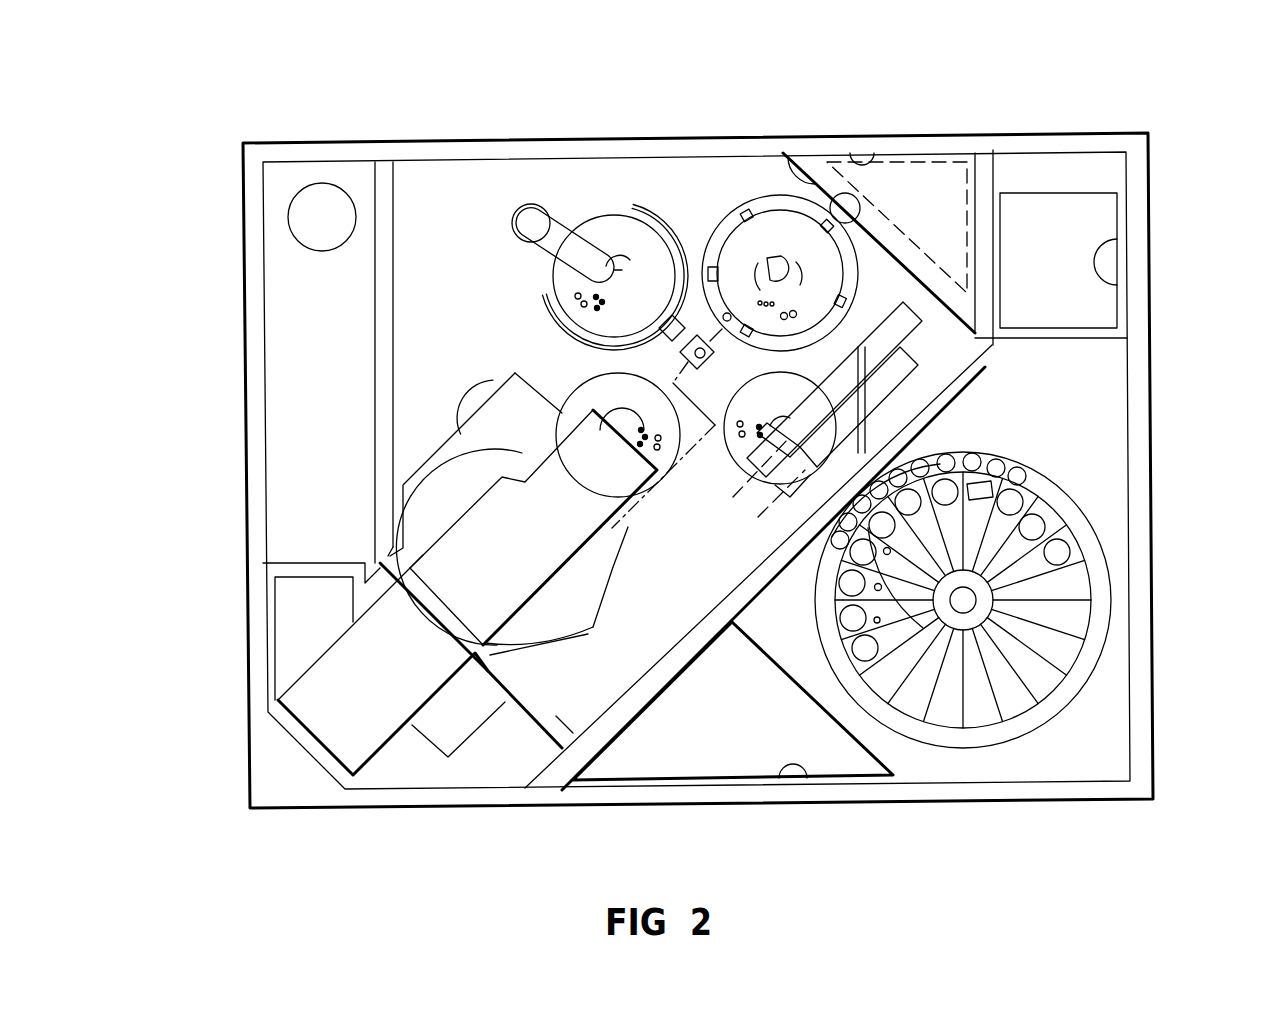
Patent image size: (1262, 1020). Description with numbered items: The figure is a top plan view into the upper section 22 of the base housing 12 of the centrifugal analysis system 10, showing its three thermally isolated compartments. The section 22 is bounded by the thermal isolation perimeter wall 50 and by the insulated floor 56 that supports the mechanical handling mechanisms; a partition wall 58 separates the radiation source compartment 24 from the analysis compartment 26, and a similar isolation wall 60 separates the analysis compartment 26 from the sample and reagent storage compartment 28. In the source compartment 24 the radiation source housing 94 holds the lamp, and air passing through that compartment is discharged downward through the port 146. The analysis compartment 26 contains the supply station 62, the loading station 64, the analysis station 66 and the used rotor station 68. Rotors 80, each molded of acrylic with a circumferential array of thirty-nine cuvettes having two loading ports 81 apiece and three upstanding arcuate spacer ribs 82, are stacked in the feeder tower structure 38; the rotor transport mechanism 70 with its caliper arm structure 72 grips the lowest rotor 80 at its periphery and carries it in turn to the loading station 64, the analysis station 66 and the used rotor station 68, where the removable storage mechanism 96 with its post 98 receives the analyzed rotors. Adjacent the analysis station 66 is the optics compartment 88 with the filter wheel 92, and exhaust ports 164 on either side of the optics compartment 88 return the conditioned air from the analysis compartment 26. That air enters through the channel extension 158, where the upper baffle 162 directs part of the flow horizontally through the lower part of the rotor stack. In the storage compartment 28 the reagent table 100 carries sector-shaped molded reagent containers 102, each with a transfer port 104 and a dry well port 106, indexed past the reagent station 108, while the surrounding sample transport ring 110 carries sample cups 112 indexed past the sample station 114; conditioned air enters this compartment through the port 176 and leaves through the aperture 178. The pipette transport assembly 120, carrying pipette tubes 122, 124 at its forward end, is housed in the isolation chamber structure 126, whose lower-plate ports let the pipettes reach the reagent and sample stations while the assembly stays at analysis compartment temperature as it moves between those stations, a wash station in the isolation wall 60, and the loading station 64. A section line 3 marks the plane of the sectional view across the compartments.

The analysis system 10 is at (155, 120).
The base housing 12 is at (245, 280).
The upper section 22 is at (230, 484).
The radiation source compartment 24 is at (298, 398).
The analysis compartment 26 is at (465, 195).
The sample and reagent material storage compartment 28 is at (1090, 388).
The cuvette supply structure 38 is at (772, 197).
The thermal isolation perimeter wall 50 is at (400, 140).
The insulated floor 56 is at (483, 170).
The partition wall 58 is at (388, 236).
The isolation wall 60 is at (987, 344).
The supply station 62 is at (707, 220).
The loading station 64 is at (735, 460).
The analysis station 66 is at (568, 385).
The used rotor station 68 is at (553, 270).
The rotor transport mechanism 70 is at (684, 353).
The caliper arm structure 72 is at (677, 252).
The rotor 80 is at (697, 312).
The loading ports 81 is at (785, 311).
The arcuate spacer ribs 82 is at (772, 284).
The optics compartment 88 is at (533, 527).
The filter wheel 92 is at (494, 552).
The radiation source housing 94 is at (420, 665).
The removable storage mechanism 96 is at (560, 222).
The post 98 is at (620, 262).
The reagent table 100 is at (1012, 493).
The reagent containers 102 is at (1068, 532).
The transfer port 104 is at (858, 642).
The dry well port 106 is at (893, 612).
The reagent station 108 is at (873, 530).
The sample transport ring 110 is at (988, 458).
The sample cups 112 is at (958, 468).
The sample station 114 is at (880, 490).
The transport assembly 120 is at (883, 370).
The pipette tube 122 is at (747, 480).
The pipette tube 124 is at (772, 499).
The isolation chamber structure 126 is at (876, 322).
The port 146 is at (290, 224).
The channel extension 158 is at (876, 158).
The upper baffle 162 is at (788, 157).
The ports 164 is at (492, 400).
The port 176 is at (1118, 252).
The aperture 178 is at (822, 777).
The section line 3 is at (913, 140).